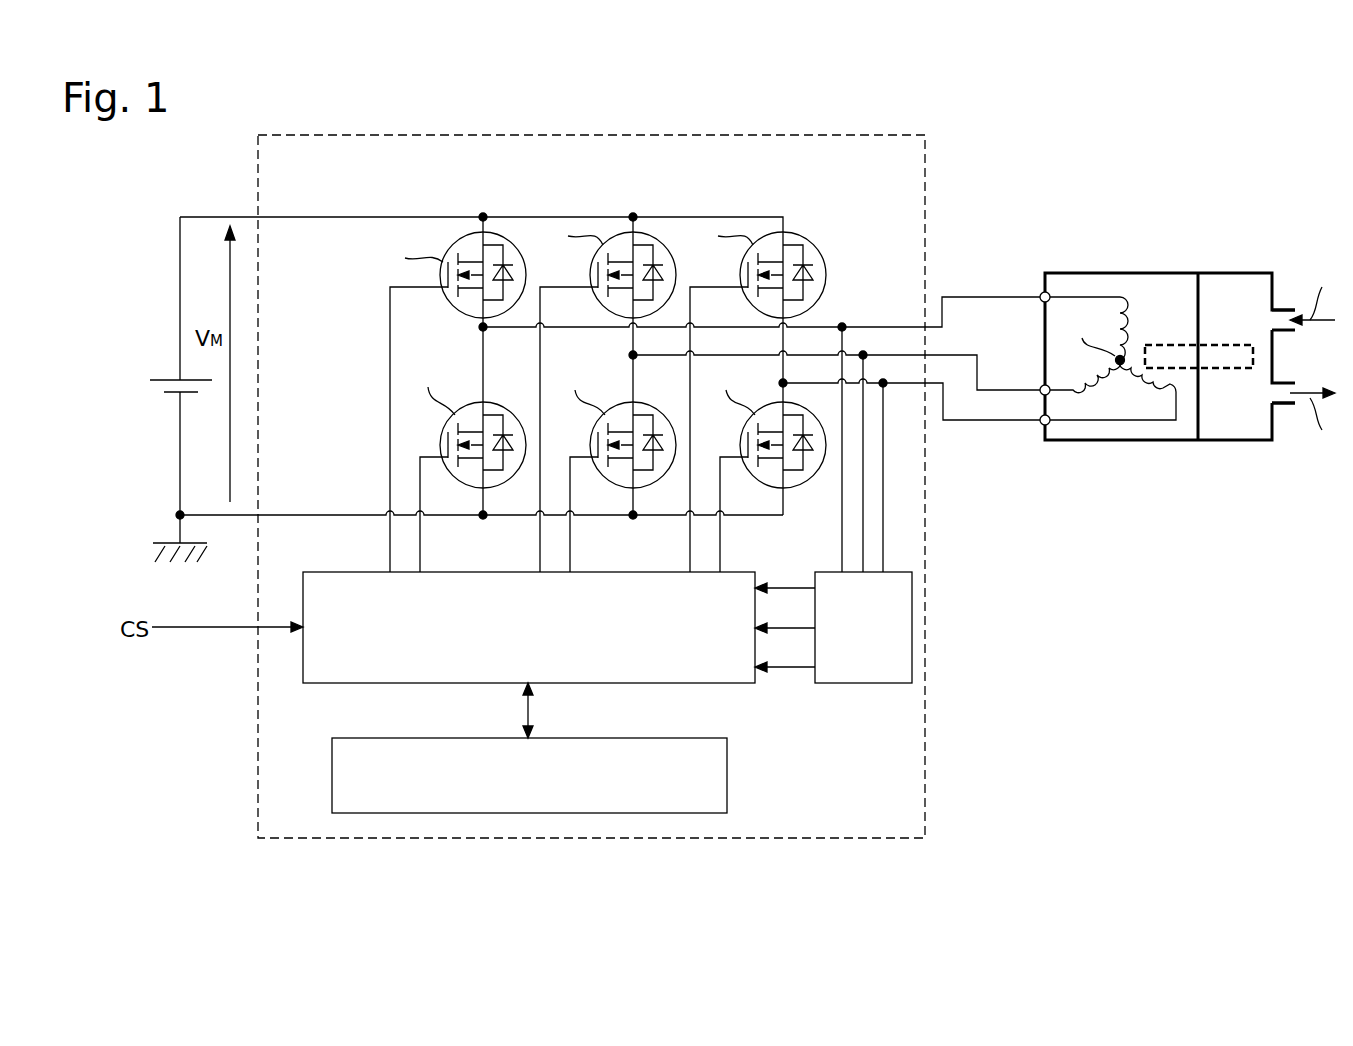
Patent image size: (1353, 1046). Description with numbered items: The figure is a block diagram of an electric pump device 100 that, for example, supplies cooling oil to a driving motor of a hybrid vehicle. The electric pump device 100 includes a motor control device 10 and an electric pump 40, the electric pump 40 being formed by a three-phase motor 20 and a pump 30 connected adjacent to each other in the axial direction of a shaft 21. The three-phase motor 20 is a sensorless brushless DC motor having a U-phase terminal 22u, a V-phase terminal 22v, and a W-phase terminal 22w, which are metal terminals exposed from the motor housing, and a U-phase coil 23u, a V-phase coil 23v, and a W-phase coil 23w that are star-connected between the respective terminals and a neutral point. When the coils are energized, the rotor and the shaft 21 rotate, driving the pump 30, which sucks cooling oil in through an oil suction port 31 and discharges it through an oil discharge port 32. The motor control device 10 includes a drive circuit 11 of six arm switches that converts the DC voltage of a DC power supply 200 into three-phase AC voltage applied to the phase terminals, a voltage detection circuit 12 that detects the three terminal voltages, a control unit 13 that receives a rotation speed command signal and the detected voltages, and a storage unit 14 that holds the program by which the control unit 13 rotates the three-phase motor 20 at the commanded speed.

The motor control device 10 is at (925, 778).
The drive circuit 11 is at (802, 212).
The voltage detection circuit 12 is at (912, 603).
The control unit 13 is at (318, 683).
The storage unit 14 is at (727, 776).
The three-phase motor 20 is at (1097, 364).
The shaft 21 is at (1230, 370).
The U-phase terminal 22u is at (1040, 294).
The V-phase terminal 22v is at (1040, 386).
The W-phase terminal 22w is at (1040, 424).
The U-phase coil 23u is at (1127, 322).
The V-phase coil 23v is at (1090, 383).
The W-phase coil 23w is at (1152, 393).
The pump 30 is at (1240, 365).
The oil suction port 31 is at (1287, 308).
The oil discharge port 32 is at (1285, 406).
The electric pump 40 is at (1277, 200).
The electric pump device 100 is at (1132, 632).
The DC power supply 200 is at (180, 380).